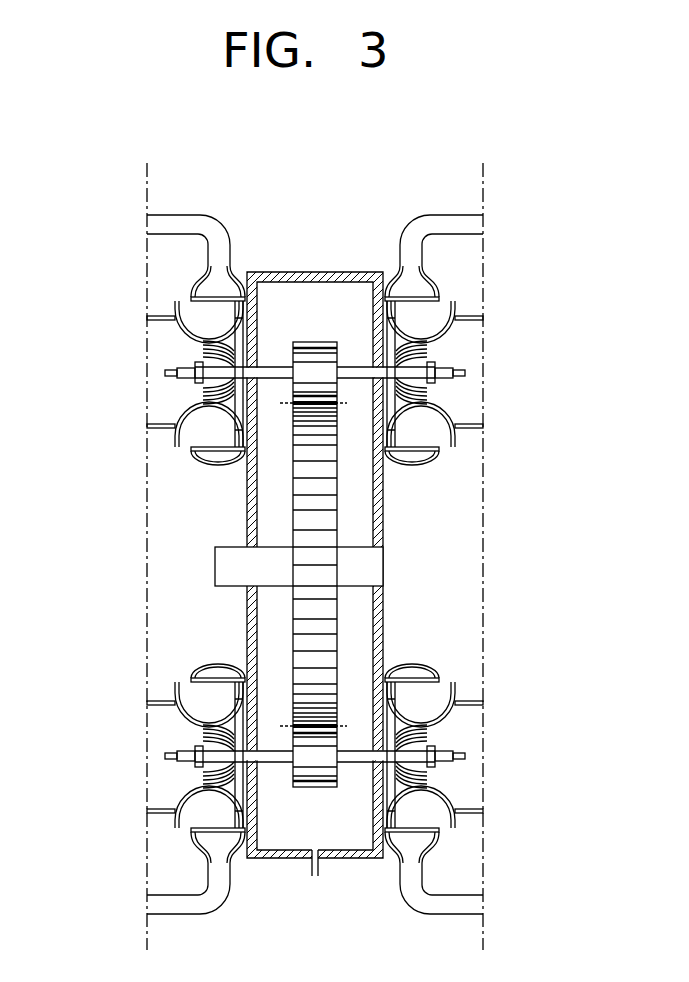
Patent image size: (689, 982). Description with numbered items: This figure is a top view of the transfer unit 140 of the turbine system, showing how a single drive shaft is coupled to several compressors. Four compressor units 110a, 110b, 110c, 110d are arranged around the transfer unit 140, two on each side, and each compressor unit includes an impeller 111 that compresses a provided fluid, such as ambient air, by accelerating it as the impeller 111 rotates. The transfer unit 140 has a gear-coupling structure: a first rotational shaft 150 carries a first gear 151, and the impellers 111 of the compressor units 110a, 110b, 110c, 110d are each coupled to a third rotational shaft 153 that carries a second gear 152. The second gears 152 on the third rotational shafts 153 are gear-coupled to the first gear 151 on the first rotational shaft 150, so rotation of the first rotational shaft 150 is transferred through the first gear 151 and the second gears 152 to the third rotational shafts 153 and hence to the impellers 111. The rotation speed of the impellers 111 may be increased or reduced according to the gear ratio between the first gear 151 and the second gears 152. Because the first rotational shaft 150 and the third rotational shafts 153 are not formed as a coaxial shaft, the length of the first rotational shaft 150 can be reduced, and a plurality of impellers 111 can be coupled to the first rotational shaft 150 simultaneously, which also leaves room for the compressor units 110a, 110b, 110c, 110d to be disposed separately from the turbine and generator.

The compressor unit 110a is at (145, 362).
The compressor unit 110b is at (145, 745).
The compressor unit 110c is at (487, 745).
The compressor unit 110d is at (490, 340).
The impeller 111 is at (463, 380).
The transfer unit 140 is at (283, 272).
The first rotational shaft 150 is at (370, 563).
The first gear 151 is at (338, 522).
The second gear 152 is at (313, 346).
The third rotational shaft 153 is at (352, 372).